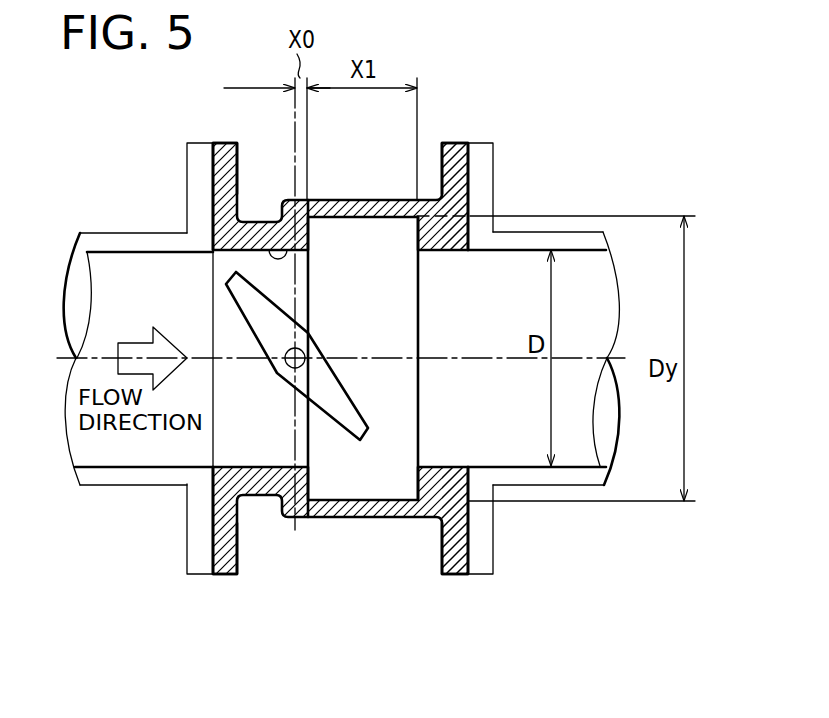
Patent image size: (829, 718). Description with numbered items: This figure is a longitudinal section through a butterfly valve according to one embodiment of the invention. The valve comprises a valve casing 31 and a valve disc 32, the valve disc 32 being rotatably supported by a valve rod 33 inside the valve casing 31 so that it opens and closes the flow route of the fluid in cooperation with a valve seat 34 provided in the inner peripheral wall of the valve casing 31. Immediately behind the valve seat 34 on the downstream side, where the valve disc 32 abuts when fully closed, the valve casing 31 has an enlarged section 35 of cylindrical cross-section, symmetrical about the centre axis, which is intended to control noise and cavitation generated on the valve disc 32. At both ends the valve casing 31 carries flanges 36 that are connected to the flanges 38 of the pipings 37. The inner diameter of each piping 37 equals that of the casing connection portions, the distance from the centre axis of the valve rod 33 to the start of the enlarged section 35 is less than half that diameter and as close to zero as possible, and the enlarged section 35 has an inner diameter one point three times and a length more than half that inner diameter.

The valve casing 31 is at (333, 518).
The valve disc 32 is at (362, 440).
The valve rod 33 is at (283, 368).
The valve seat 34 is at (271, 248).
The enlarged section 35 is at (380, 287).
The flanges 36 is at (225, 568).
The pipings 37 is at (112, 480).
The flanges 38 is at (187, 523).